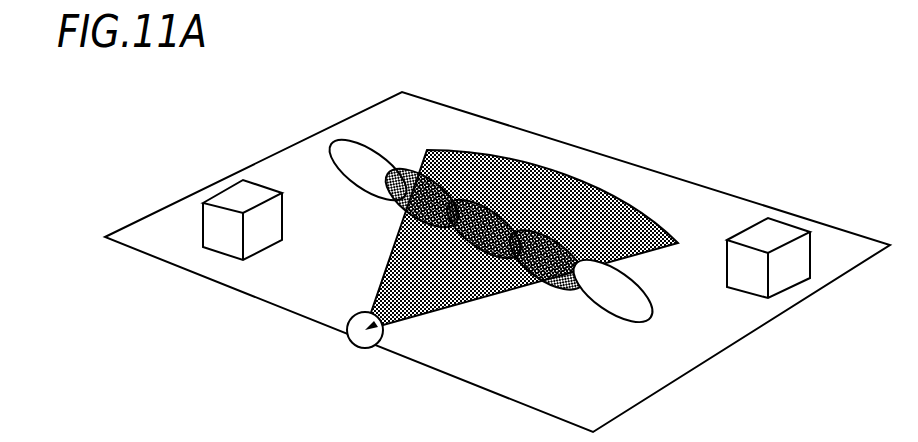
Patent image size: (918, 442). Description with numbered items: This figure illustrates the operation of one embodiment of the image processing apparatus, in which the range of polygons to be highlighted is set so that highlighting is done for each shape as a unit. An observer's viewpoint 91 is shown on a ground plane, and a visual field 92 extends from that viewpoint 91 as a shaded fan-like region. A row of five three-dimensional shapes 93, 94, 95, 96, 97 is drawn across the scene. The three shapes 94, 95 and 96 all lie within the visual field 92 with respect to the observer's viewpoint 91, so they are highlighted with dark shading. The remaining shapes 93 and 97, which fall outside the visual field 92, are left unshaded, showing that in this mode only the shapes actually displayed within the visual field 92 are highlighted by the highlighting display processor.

The observer's viewpoint 91 is at (362, 343).
The visual field 92 is at (645, 207).
The 3D shape 93 is at (348, 143).
The 3D shape 94 is at (426, 180).
The 3D shape 95 is at (489, 220).
The 3D shape 96 is at (555, 245).
The 3D shape 97 is at (621, 280).